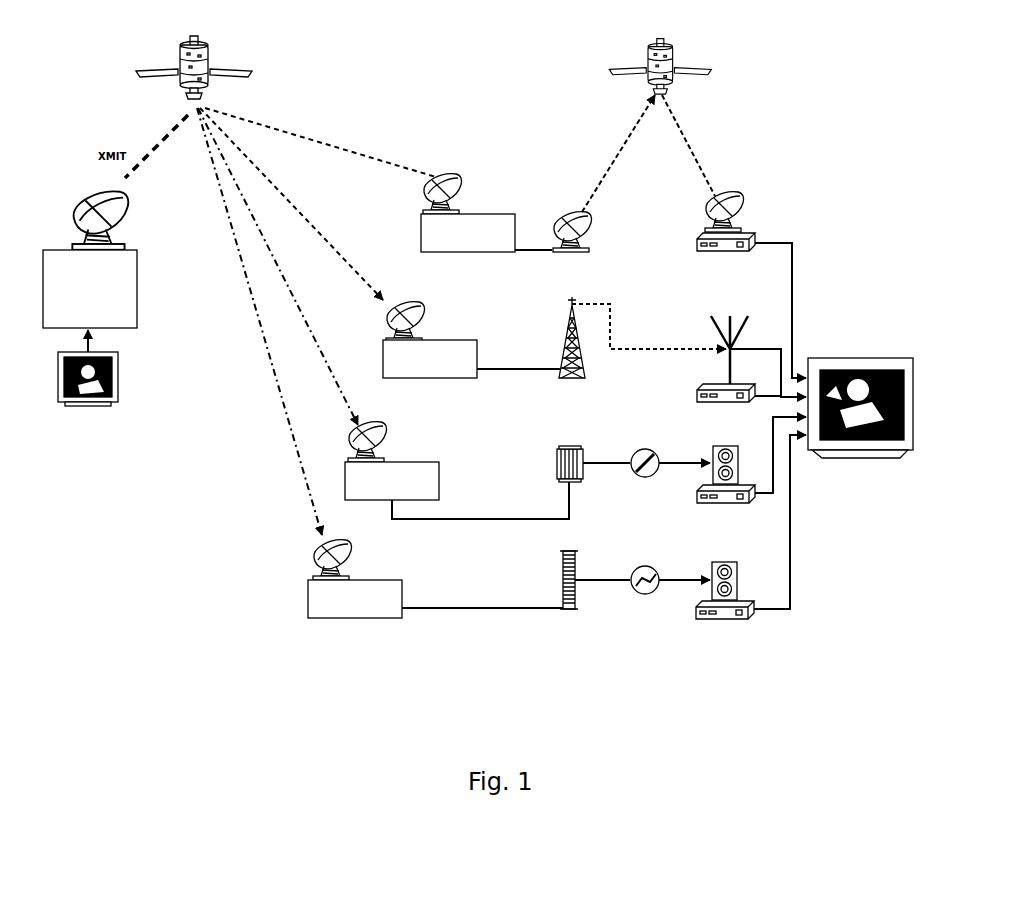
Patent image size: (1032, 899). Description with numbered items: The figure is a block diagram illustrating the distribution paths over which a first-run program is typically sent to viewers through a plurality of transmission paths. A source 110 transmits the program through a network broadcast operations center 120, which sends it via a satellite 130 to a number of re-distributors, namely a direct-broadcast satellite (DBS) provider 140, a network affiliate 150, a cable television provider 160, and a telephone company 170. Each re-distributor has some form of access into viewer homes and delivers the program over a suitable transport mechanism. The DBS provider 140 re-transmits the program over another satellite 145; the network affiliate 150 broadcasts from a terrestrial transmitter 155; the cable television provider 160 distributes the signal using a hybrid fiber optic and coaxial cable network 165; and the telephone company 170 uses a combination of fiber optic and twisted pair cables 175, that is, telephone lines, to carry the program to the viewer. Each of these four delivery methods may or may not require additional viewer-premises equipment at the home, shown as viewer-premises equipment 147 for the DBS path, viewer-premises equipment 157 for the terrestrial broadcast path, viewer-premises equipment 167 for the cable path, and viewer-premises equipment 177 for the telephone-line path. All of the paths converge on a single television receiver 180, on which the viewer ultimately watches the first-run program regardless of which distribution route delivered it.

The source 110 is at (120, 362).
The network broadcast operations center 120 is at (140, 272).
The satellite 130 is at (205, 47).
The direct-broadcast satellite (DBS) provider 140 is at (476, 214).
The satellite 145 is at (672, 50).
The viewer-premises equipment 147 is at (755, 230).
The network affiliate 150 is at (448, 340).
The terrestrial transmitter 155 is at (574, 300).
The viewer-premises equipment 157 is at (695, 400).
The cable television provider 160 is at (422, 462).
The hybrid fiber optic and coaxial cable network 165 is at (620, 430).
The viewer-premises equipment 167 is at (697, 497).
The telephone company 170 is at (380, 580).
The fiber optic and twisted pair cables 175 is at (578, 555).
The viewer-premises equipment 177 is at (696, 613).
The television receiver 180 is at (845, 358).